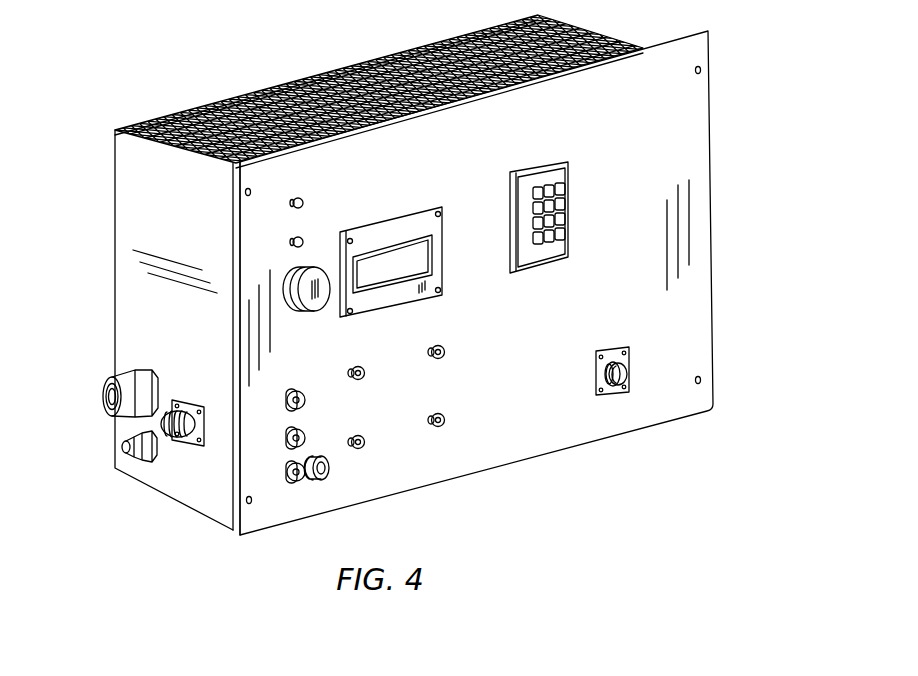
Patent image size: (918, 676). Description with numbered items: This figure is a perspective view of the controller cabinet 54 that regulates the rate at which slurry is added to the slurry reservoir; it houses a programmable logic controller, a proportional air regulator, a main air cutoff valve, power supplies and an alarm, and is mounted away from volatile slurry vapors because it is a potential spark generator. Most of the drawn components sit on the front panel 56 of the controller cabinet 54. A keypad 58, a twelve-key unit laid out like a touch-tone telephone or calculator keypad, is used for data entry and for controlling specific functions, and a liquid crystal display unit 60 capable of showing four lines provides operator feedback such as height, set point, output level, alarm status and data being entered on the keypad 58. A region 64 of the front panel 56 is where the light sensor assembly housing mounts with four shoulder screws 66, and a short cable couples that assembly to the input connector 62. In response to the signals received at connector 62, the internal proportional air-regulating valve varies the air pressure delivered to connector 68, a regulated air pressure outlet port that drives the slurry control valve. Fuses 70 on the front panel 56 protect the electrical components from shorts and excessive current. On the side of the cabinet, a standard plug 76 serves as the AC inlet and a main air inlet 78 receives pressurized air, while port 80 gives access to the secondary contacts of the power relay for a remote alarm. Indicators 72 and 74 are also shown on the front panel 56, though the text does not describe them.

The controller cabinet 54 is at (418, 275).
The front panel 56 is at (702, 298).
The keypad 58 is at (571, 197).
The liquid crystal display unit 60 is at (382, 262).
The input connector 62 is at (619, 393).
The region 64 is at (394, 378).
The shoulder screws 66 is at (445, 357).
The connector 68 is at (362, 450).
The fuses 70 is at (284, 472).
The indicator light 72 is at (292, 203).
The indicator light 74 is at (292, 242).
The standard plug 76 is at (104, 396).
The main air inlet 78 is at (122, 447).
The port 80 is at (183, 442).